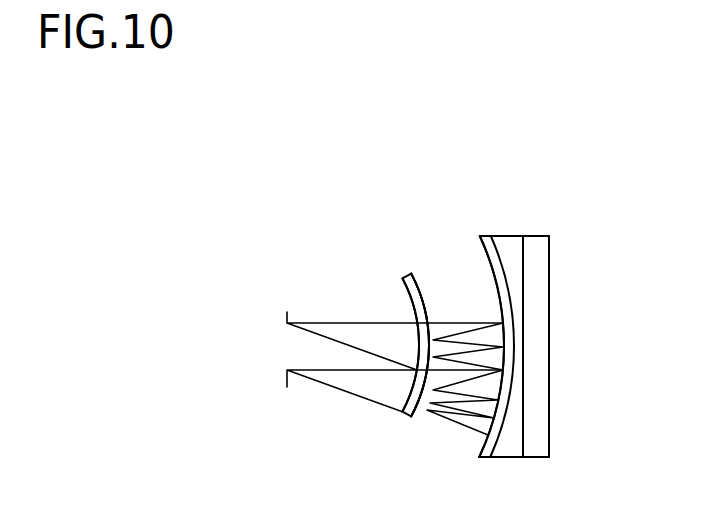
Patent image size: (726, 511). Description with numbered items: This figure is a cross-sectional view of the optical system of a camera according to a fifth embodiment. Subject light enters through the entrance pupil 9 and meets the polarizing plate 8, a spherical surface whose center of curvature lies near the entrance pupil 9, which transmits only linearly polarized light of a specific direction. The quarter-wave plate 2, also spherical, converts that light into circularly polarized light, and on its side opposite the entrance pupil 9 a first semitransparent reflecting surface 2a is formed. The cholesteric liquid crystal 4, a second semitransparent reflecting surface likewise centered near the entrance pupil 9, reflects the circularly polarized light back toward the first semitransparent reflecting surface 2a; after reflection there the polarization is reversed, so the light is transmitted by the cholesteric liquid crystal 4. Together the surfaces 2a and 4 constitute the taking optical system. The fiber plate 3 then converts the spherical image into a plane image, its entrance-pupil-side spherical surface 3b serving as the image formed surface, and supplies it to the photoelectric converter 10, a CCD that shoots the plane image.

The quarter-wave plate 2 is at (411, 274).
The first semitransparent reflecting surface 2a is at (422, 287).
The fiber plate 3 is at (517, 235).
The spherical surface 3b is at (488, 236).
The cholesteric liquid crystal 4 is at (481, 235).
The polarizing plate 8 is at (403, 277).
The entrance pupil 9 is at (287, 303).
The photoelectric converter 10 is at (550, 273).